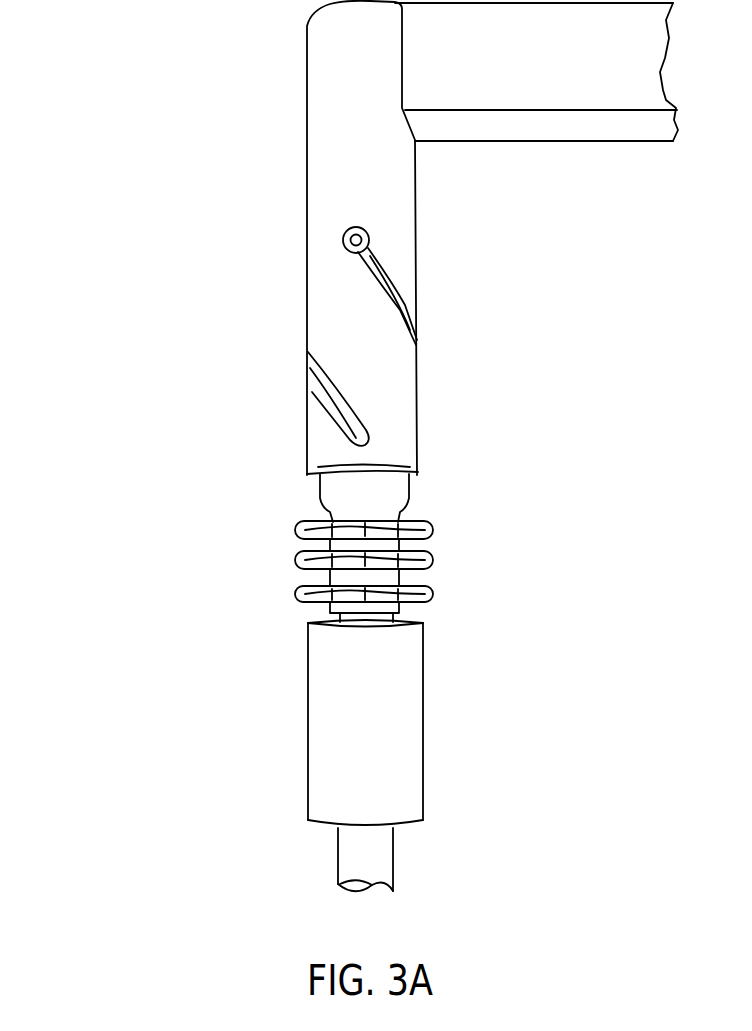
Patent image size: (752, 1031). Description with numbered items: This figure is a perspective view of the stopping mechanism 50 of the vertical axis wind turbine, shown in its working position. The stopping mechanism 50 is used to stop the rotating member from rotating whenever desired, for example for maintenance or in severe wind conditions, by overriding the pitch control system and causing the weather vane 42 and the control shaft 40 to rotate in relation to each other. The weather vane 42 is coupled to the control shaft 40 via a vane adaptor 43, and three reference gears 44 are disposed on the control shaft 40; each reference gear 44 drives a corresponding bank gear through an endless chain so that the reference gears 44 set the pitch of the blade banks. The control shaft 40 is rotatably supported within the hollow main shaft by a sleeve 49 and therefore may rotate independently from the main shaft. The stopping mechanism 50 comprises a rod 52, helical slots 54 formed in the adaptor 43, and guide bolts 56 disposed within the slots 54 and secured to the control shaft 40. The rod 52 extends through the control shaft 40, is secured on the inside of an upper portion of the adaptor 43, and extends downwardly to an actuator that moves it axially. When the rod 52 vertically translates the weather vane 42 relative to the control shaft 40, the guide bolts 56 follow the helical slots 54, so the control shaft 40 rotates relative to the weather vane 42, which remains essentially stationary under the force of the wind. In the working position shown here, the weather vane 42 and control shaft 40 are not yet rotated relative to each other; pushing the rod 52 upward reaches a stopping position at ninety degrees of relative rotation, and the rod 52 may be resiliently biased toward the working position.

The stopping mechanism 50 is at (122, 136).
The weather vane 42 is at (550, 120).
The vane adaptor 43 is at (340, 157).
The guide bolts 56 is at (369, 238).
The helical slots 54 is at (400, 303).
The control shaft 40 is at (393, 490).
The reference gears 44 is at (432, 528).
The sleeve 49 is at (397, 727).
The rod 52 is at (380, 850).